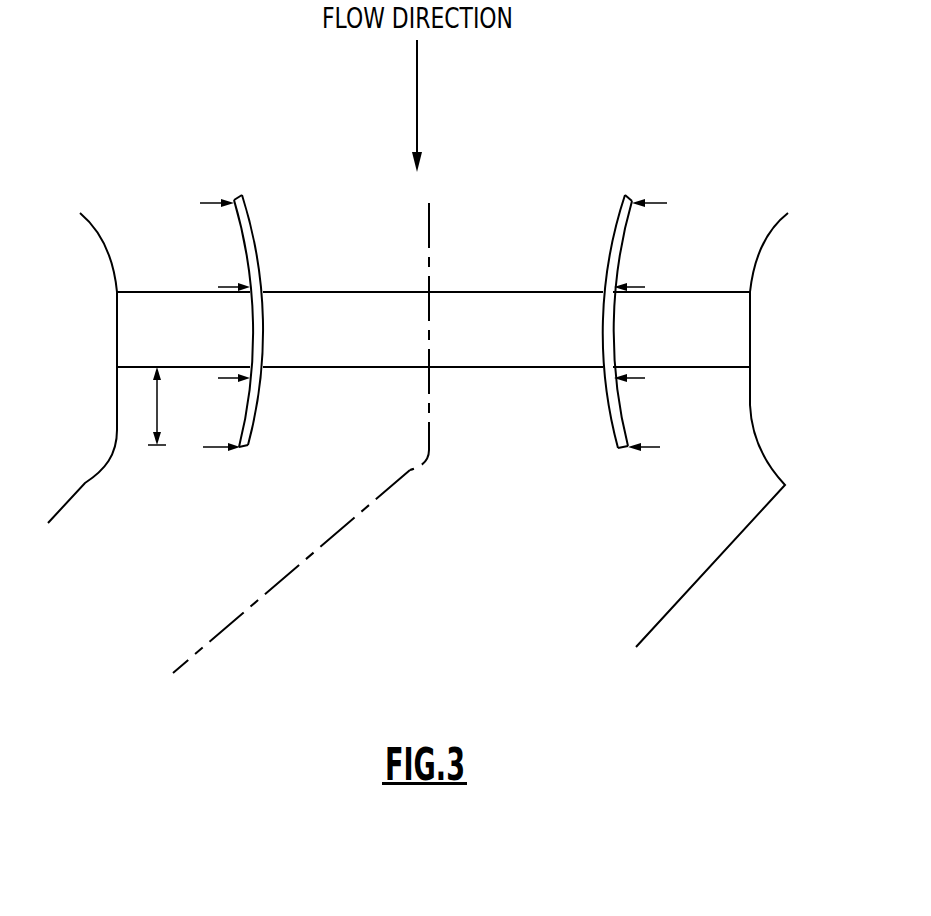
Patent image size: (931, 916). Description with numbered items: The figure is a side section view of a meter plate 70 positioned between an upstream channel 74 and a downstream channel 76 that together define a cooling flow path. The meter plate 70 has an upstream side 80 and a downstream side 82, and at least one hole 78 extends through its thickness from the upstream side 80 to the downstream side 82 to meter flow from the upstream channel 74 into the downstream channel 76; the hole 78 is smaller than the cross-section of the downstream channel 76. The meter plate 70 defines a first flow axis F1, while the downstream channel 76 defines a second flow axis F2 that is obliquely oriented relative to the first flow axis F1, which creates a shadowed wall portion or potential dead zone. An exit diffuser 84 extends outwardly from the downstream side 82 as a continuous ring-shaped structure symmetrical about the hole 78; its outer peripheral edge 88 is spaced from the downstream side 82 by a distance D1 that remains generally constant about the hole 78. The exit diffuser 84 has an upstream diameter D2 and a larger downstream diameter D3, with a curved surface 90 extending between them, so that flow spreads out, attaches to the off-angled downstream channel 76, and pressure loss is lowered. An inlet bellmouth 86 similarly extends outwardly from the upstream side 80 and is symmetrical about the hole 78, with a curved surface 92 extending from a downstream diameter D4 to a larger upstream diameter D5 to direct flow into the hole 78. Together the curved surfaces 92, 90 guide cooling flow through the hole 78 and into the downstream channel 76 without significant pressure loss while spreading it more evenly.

The meter plate 70 is at (427, 368).
The upstream channel 74 is at (730, 250).
The downstream channel 76 is at (728, 428).
The hole 78 is at (263, 333).
The upstream side 80 is at (168, 292).
The downstream side 82 is at (660, 367).
The exit diffuser 84 is at (609, 366).
The inlet bellmouth 86 is at (607, 232).
The outer peripheral edge 88 is at (234, 353).
The curved surface 90 is at (243, 420).
The curved surface 92 is at (616, 257).
The distance D1 is at (154, 406).
The upstream diameter D2 is at (230, 380).
The downstream diameter D3 is at (652, 418).
The downstream diameter D4 is at (229, 287).
The upstream diameter D5 is at (655, 239).
The first flow axis F1 is at (429, 235).
The second flow axis F2 is at (260, 600).